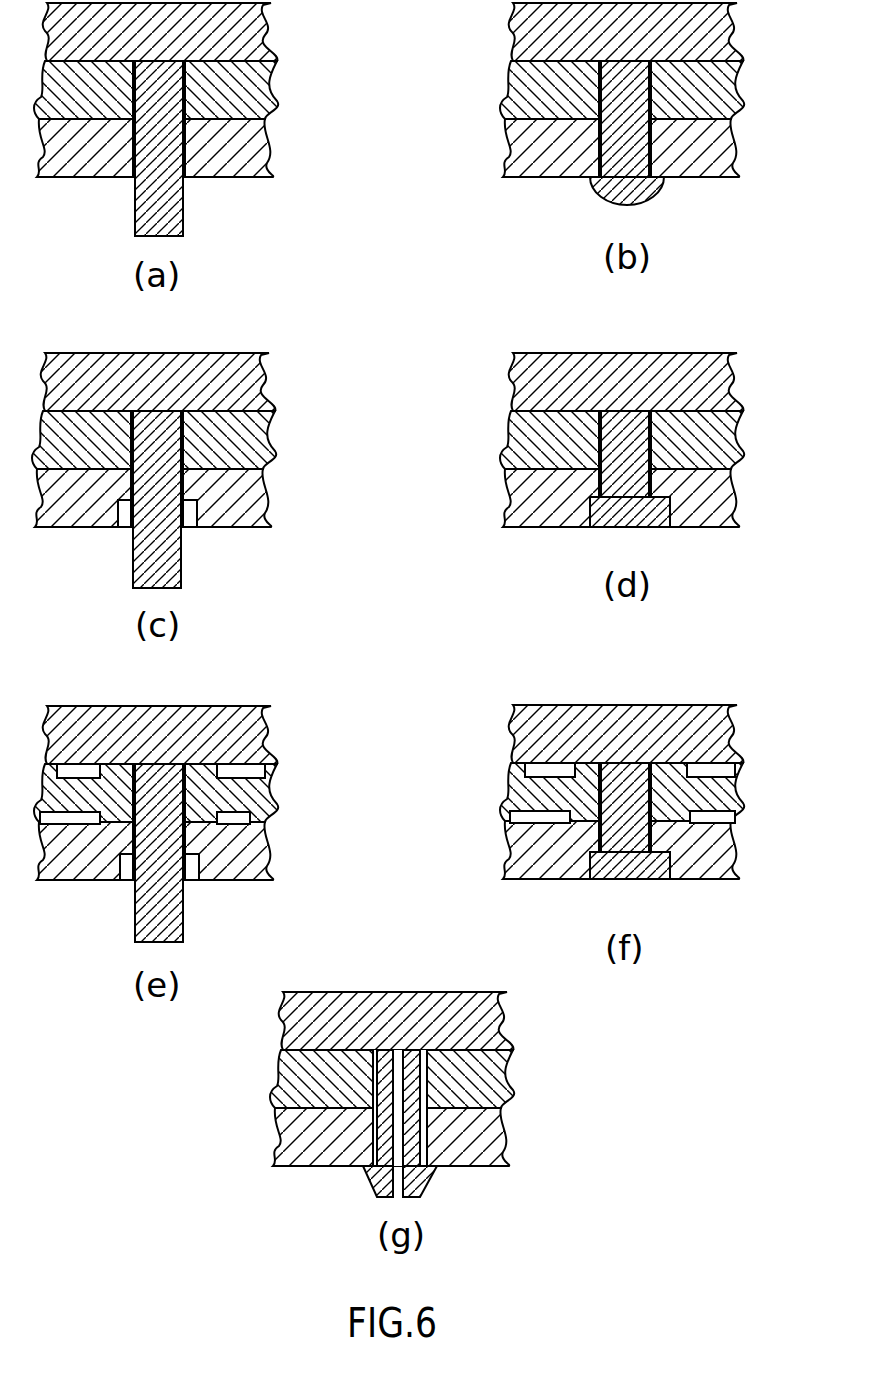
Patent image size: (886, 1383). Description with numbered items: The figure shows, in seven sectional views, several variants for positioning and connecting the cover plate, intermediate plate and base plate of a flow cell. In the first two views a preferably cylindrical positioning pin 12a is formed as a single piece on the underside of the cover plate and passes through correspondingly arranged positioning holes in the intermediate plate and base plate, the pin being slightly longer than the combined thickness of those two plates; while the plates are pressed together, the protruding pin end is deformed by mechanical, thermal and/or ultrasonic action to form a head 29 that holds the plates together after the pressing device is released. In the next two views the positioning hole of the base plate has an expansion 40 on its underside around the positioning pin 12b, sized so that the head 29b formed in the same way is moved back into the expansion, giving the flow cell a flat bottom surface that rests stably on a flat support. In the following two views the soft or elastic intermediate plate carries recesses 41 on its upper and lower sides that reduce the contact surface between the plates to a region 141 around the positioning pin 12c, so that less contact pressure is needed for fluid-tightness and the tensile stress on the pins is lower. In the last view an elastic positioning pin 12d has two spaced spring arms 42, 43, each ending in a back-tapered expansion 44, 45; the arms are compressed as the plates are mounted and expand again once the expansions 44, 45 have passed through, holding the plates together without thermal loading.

The positioning pin 12a is at (184, 200).
The head 29 is at (666, 199).
The positioning pin 12b is at (187, 440).
The expansion 40 is at (200, 512).
The head 29b is at (653, 517).
The region 141 is at (117, 787).
The recesses 41 is at (236, 770).
The positioning pin 12c is at (207, 848).
The positioning pin 12d is at (405, 1135).
The spring arm 42 is at (377, 1123).
The spring arm 43 is at (423, 1127).
The back-tapered expansion 44 is at (366, 1177).
The back-tapered expansion 45 is at (440, 1177).